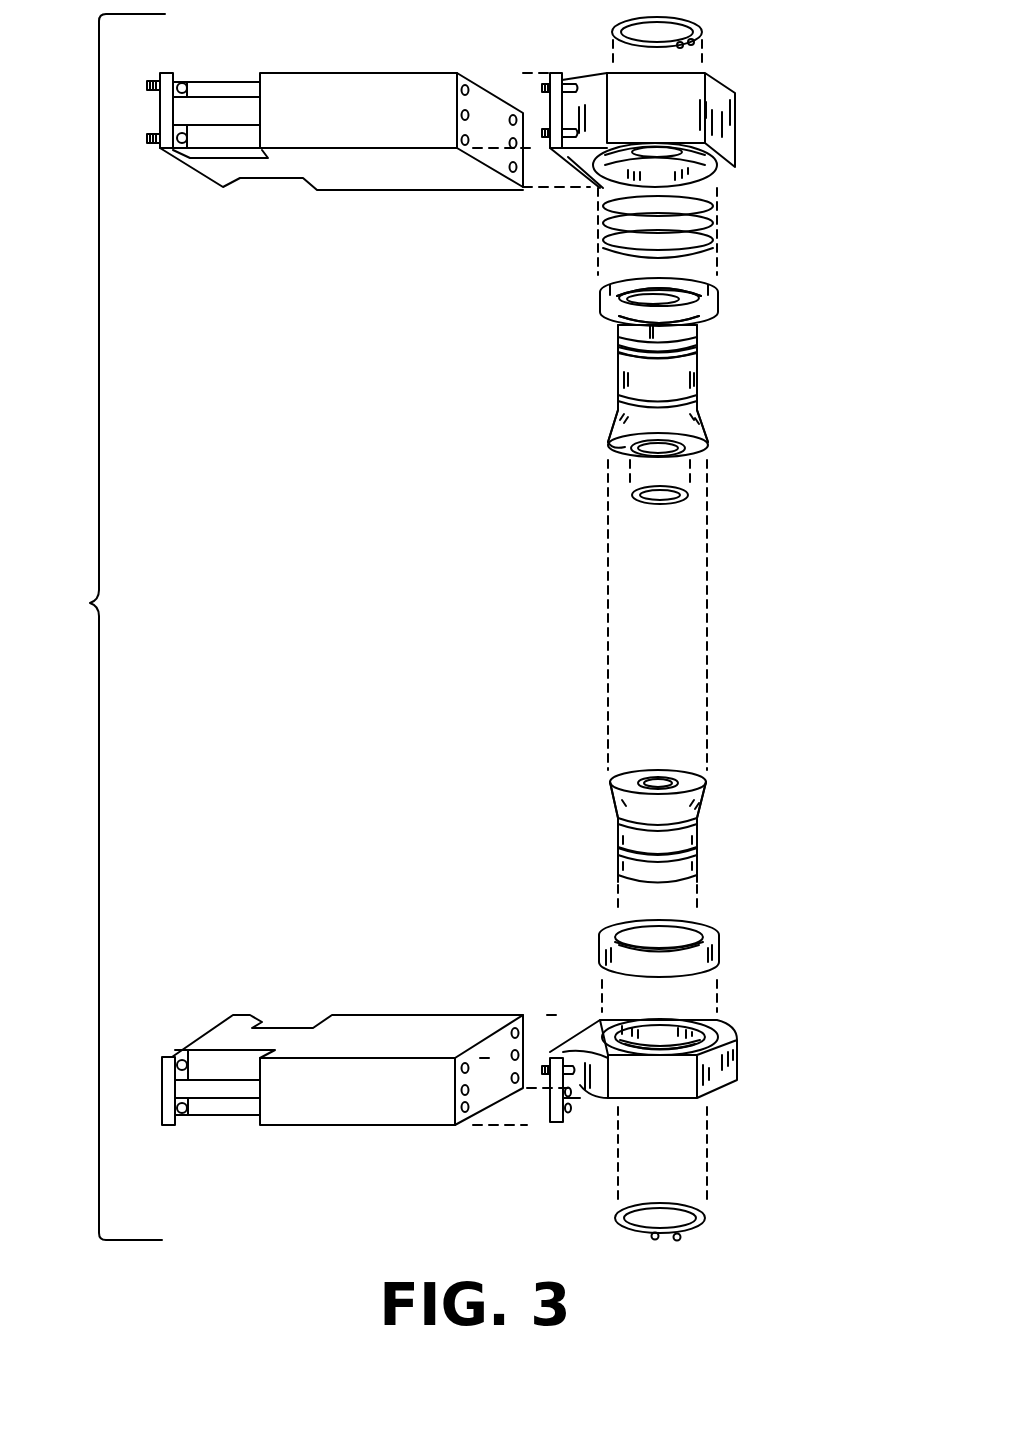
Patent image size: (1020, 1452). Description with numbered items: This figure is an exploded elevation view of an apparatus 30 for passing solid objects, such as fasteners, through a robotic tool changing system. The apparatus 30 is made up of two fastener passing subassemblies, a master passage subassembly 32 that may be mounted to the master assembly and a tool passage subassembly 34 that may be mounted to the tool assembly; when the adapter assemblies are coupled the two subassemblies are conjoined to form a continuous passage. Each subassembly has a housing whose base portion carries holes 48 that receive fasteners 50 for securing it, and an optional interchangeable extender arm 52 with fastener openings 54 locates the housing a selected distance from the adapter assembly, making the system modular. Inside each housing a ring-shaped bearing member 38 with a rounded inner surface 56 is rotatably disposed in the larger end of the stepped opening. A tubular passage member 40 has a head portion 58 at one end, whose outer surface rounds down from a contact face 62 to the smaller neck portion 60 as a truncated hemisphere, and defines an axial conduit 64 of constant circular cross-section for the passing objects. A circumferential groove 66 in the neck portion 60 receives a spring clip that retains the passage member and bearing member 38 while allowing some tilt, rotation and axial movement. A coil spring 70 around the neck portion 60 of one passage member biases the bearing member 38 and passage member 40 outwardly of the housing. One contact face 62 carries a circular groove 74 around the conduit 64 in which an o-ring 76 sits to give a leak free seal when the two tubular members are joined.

The apparatus for passing solid objects 30 is at (107, 627).
The master passage subassembly 32 is at (783, 114).
The tool passage subassembly 34 is at (755, 1044).
The bearing member 38 is at (722, 294).
The tubular passage member 40 is at (702, 381).
The holes 48 is at (462, 90).
The fasteners 50 is at (186, 84).
The extender arm 52 is at (388, 82).
The fastener openings 54 is at (182, 1060).
The rounded inner surface 56 is at (617, 326).
The head portion 58 is at (706, 427).
The neck portion 60 is at (700, 336).
The contact face 62 is at (700, 452).
The conduit 64 is at (658, 778).
The circumferential groove 66 is at (617, 372).
The coil spring 70 is at (713, 247).
The circular groove 74 is at (623, 447).
The o-ring 76 is at (655, 505).